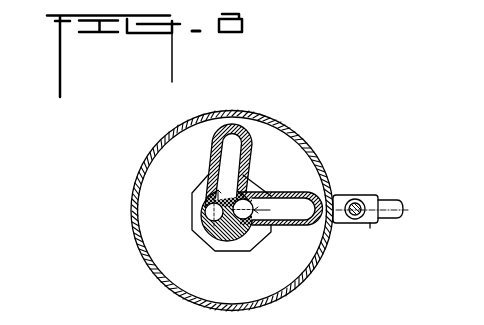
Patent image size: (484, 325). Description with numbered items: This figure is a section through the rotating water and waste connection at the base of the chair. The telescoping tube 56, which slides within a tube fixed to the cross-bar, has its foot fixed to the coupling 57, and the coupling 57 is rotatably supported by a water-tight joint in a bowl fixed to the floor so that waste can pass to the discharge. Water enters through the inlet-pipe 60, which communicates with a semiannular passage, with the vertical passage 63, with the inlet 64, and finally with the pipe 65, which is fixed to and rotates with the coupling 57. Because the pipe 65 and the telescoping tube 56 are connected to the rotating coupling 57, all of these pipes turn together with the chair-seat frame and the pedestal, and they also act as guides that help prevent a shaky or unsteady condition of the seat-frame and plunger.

The telescoping tube 56 is at (308, 146).
The coupling 57 is at (283, 227).
The inlet-pipe 60 is at (391, 201).
The vertical passage 63 is at (212, 214).
The inlet 64 is at (224, 174).
The pipe 65 is at (210, 164).